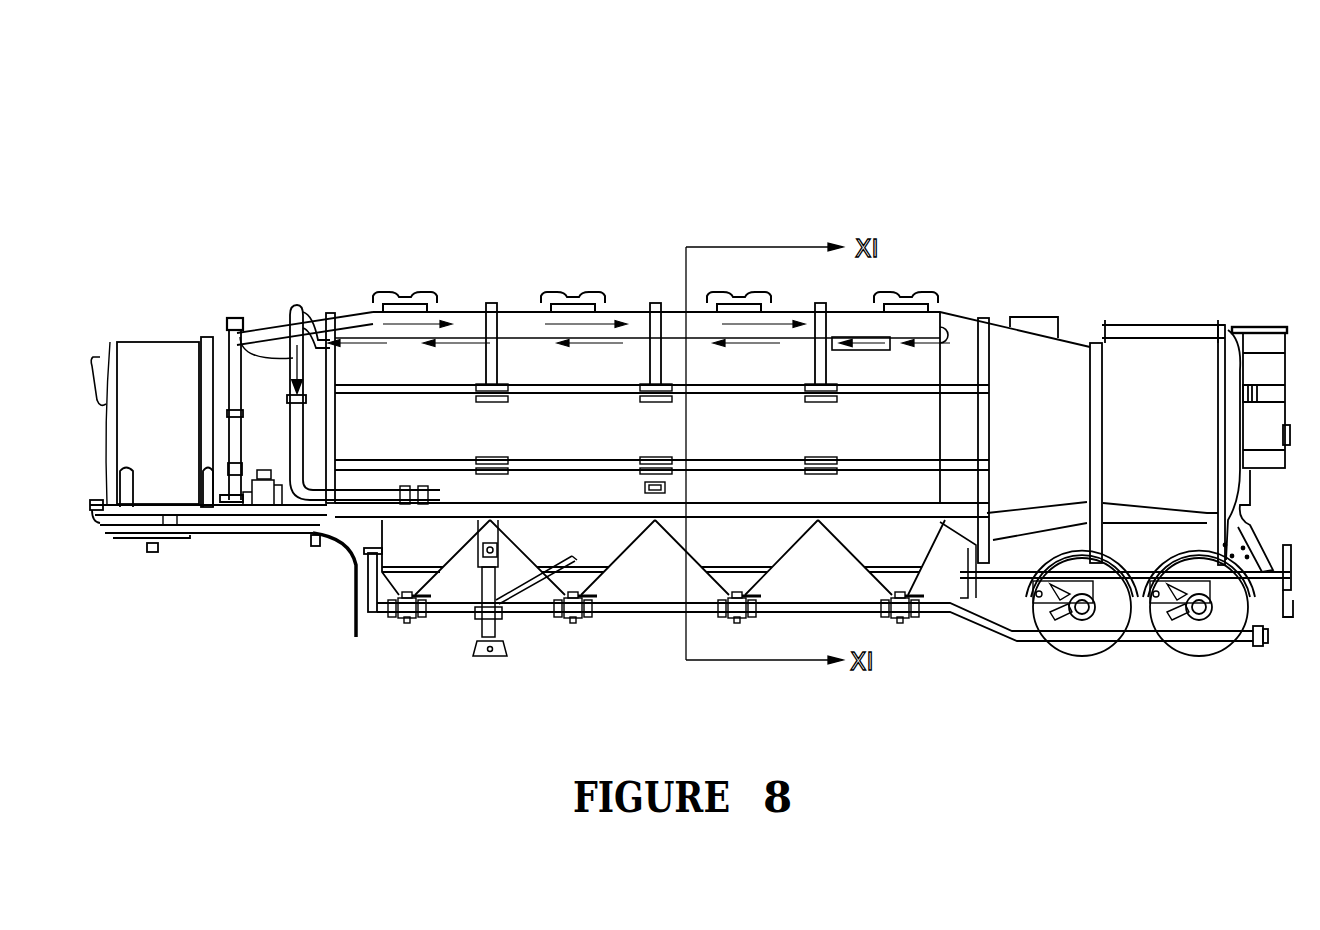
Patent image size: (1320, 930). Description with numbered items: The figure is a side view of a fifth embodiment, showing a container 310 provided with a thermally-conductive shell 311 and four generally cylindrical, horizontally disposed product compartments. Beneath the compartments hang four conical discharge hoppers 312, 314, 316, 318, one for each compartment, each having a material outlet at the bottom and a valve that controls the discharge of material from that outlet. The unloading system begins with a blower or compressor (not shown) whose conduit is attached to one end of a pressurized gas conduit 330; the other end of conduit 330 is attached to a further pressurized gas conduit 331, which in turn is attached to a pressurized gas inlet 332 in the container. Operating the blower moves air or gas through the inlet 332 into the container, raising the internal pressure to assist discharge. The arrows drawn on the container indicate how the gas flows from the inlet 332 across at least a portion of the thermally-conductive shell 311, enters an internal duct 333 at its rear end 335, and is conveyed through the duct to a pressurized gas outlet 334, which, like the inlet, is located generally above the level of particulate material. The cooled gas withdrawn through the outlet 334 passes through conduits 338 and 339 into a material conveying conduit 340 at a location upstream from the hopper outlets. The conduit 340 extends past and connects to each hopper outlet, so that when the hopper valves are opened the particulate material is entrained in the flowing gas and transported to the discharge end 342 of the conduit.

The container 310 is at (1028, 360).
The thermally-conductive shell 311 is at (470, 296).
The conical discharge hopper 312 is at (442, 556).
The conical discharge hopper 314 is at (602, 553).
The conical discharge hopper 316 is at (757, 554).
The conical discharge hopper 318 is at (922, 554).
The pressurized gas conduit 330 is at (138, 520).
The pressurized gas conduit 331 is at (237, 432).
The pressurized gas inlet 332 is at (239, 306).
The internal duct 333 is at (518, 342).
The pressurized gas outlet 334 is at (315, 292).
The rear end 335 is at (885, 362).
The conduit 338 is at (293, 370).
The conduit 339 is at (373, 583).
The material conveying conduit 340 is at (653, 610).
The discharge end 342 is at (1278, 636).